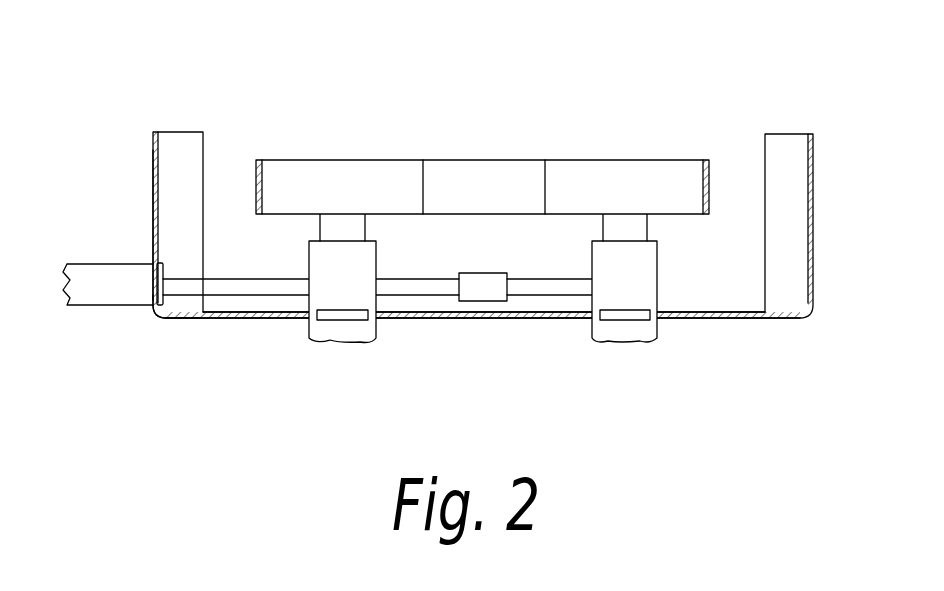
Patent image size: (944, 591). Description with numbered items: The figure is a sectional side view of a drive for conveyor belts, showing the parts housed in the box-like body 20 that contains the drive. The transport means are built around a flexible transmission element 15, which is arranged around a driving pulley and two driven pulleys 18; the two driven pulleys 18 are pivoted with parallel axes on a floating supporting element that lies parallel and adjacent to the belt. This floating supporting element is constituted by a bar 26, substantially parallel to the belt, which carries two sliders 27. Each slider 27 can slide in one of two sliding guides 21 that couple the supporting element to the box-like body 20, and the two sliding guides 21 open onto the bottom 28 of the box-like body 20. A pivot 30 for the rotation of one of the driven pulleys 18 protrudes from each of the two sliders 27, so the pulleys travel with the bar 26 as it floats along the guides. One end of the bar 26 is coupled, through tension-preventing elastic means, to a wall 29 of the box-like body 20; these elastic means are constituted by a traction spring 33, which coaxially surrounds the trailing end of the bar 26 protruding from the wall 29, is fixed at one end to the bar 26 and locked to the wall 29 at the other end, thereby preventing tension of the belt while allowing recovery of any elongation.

The flexible transmission element 15 is at (253, 157).
The driven pulleys 18 is at (350, 178).
The box-like body 20 is at (148, 139).
The sliding guides 21 is at (277, 318).
The bar 26 is at (228, 287).
The sliders 27 is at (357, 260).
The bottom 28 is at (188, 331).
The wall 29 is at (153, 188).
The pivot 30 is at (350, 224).
The traction spring 33 is at (110, 270).